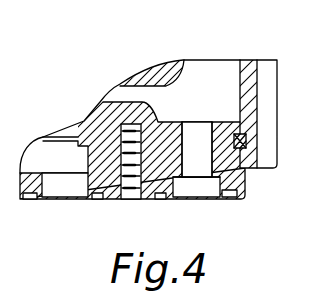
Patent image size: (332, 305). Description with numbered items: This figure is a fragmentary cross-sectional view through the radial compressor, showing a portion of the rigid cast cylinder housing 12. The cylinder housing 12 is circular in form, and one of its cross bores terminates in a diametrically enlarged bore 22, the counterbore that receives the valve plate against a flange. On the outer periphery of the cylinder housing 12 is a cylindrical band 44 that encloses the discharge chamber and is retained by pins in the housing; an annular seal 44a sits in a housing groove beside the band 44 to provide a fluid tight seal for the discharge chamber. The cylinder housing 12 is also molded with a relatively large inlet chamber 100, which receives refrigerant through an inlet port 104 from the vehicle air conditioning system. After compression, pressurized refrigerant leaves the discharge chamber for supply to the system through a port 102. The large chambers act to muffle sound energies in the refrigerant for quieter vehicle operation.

The cylinder housing 12 is at (245, 182).
The enlarged bore 22 is at (212, 88).
The cylindrical band 44 is at (248, 92).
The annular seal 44a is at (244, 152).
The inlet chamber 100 is at (47, 152).
The port 102 is at (186, 188).
The inlet port 104 is at (68, 183).